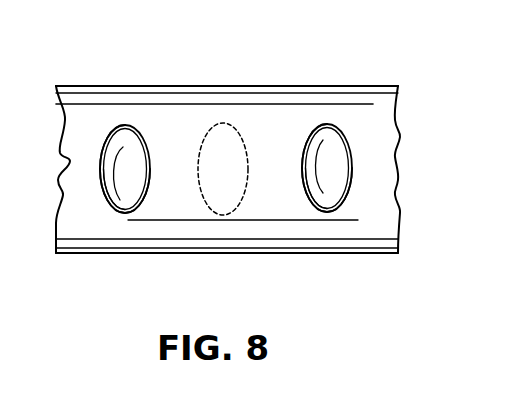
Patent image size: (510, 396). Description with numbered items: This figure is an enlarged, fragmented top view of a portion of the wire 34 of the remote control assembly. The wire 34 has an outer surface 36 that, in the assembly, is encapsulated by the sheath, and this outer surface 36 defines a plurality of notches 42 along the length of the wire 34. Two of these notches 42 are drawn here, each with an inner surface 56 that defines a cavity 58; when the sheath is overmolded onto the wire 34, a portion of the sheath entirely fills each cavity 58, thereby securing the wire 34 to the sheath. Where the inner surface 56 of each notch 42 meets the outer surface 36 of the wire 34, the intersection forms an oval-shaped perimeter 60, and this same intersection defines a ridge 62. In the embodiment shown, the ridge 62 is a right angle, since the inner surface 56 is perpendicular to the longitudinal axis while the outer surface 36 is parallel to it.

The wire 34 is at (192, 115).
The outer surface 36 is at (243, 86).
The notches 42 is at (122, 222).
The inner surface 56 is at (131, 156).
The cavity 58 is at (122, 140).
The oval-shaped perimeter 60 is at (105, 180).
The ridge 62 is at (108, 203).